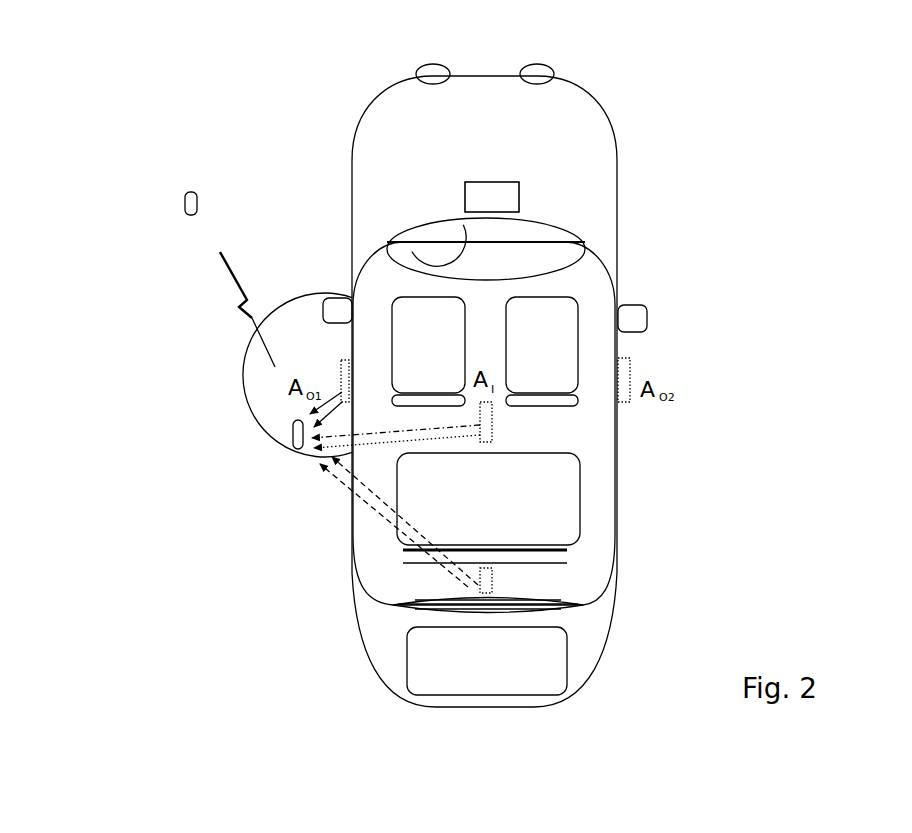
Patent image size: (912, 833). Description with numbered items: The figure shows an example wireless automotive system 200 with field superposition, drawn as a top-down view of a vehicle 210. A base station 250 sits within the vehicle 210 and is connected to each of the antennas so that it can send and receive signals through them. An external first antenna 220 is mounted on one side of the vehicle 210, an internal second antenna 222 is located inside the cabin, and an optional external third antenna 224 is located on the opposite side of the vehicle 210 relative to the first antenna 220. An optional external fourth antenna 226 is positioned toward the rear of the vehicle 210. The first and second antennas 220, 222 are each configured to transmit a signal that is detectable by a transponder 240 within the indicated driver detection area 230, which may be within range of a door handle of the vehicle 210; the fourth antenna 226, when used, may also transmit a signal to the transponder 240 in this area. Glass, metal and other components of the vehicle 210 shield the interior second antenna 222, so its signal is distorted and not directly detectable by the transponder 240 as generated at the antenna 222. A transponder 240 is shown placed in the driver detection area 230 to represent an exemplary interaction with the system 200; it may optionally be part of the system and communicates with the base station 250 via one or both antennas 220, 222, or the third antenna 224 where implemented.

The wireless automotive system 200 is at (118, 58).
The vehicle 210 is at (584, 97).
The external first antenna 220 is at (346, 358).
The internal second antenna 222 is at (494, 422).
The external third antenna 224 is at (622, 358).
The external fourth antenna 226 is at (493, 575).
The driver detection area 230 is at (300, 298).
The transponder 240 is at (298, 452).
The base station 250 is at (470, 183).